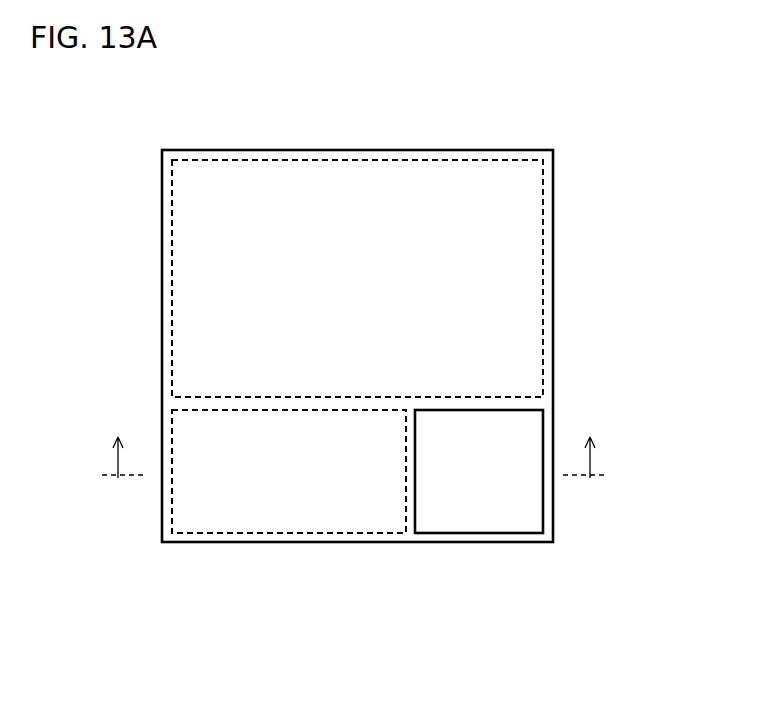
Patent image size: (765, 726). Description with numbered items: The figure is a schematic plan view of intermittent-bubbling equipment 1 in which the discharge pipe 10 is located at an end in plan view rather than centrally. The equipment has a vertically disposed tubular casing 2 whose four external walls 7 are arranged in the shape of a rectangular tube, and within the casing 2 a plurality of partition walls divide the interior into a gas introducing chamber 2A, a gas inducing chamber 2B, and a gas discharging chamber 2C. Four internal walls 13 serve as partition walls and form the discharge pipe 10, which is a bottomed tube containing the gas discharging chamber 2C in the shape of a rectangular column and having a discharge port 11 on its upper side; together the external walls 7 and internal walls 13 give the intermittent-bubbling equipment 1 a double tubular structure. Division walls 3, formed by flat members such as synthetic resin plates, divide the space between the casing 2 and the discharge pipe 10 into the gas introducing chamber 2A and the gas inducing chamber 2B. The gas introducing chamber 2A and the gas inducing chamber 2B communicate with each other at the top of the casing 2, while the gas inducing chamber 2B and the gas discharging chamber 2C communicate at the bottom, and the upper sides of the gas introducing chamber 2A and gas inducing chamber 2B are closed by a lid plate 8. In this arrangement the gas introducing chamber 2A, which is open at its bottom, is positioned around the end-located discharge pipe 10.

The intermittent-bubbling equipment 1 is at (160, 149).
The casing 2 is at (560, 545).
The gas introducing chamber 2A is at (515, 172).
The gas inducing chamber 2B is at (190, 520).
The gas discharging chamber 2C is at (537, 503).
The division wall 3 is at (213, 397).
The external wall 7 is at (162, 213).
The lid plate 8 is at (459, 172).
The discharge pipe 10 is at (468, 398).
The discharge port 11 is at (543, 517).
The internal wall 13 is at (512, 403).